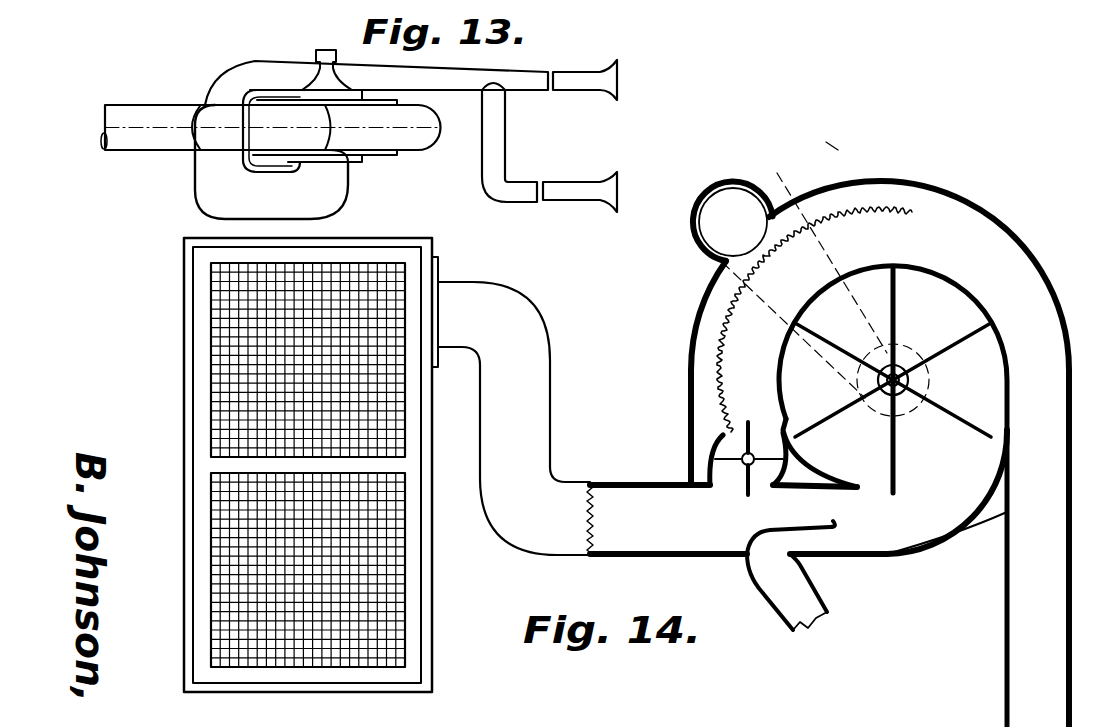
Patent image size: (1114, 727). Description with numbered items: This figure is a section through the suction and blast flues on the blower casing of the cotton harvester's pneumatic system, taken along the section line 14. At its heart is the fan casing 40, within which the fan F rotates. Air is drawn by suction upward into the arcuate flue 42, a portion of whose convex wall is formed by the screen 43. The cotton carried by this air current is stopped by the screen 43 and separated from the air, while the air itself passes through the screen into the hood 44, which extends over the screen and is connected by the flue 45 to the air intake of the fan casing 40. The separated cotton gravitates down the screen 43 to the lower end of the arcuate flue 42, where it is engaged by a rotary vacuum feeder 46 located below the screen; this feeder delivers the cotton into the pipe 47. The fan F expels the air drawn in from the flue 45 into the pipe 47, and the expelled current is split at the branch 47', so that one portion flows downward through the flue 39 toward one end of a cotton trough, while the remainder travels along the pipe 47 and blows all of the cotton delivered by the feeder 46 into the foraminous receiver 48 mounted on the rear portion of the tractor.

In FIG. 13, the section line 14 is at (97, 122).
In FIG. 13, the flue 39 is at (610, 100).
In FIG. 14, the flue 39 is at (788, 622).
In FIG. 13, the fan casing 40 is at (388, 162).
In FIG. 14, the fan casing 40 is at (983, 300).
In FIG. 13, the arcuate flue 42 is at (428, 132).
In FIG. 14, the arcuate flue 42 is at (1073, 488).
In FIG. 14, the screen 43 is at (830, 218).
In FIG. 13, the hood 44 is at (267, 128).
In FIG. 14, the hood 44 is at (697, 318).
In FIG. 13, the flue 45 is at (233, 198).
In FIG. 14, the flue 45 is at (752, 192).
In FIG. 14, the rotary vacuum feeder 46 is at (742, 457).
In FIG. 13, the pipe 47 is at (360, 77).
In FIG. 14, the pipe 47 is at (662, 436).
In FIG. 14, the split point 47' is at (804, 575).
In FIG. 14, the foraminous receiver 48 is at (427, 588).
In FIG. 14, the fan F is at (897, 471).